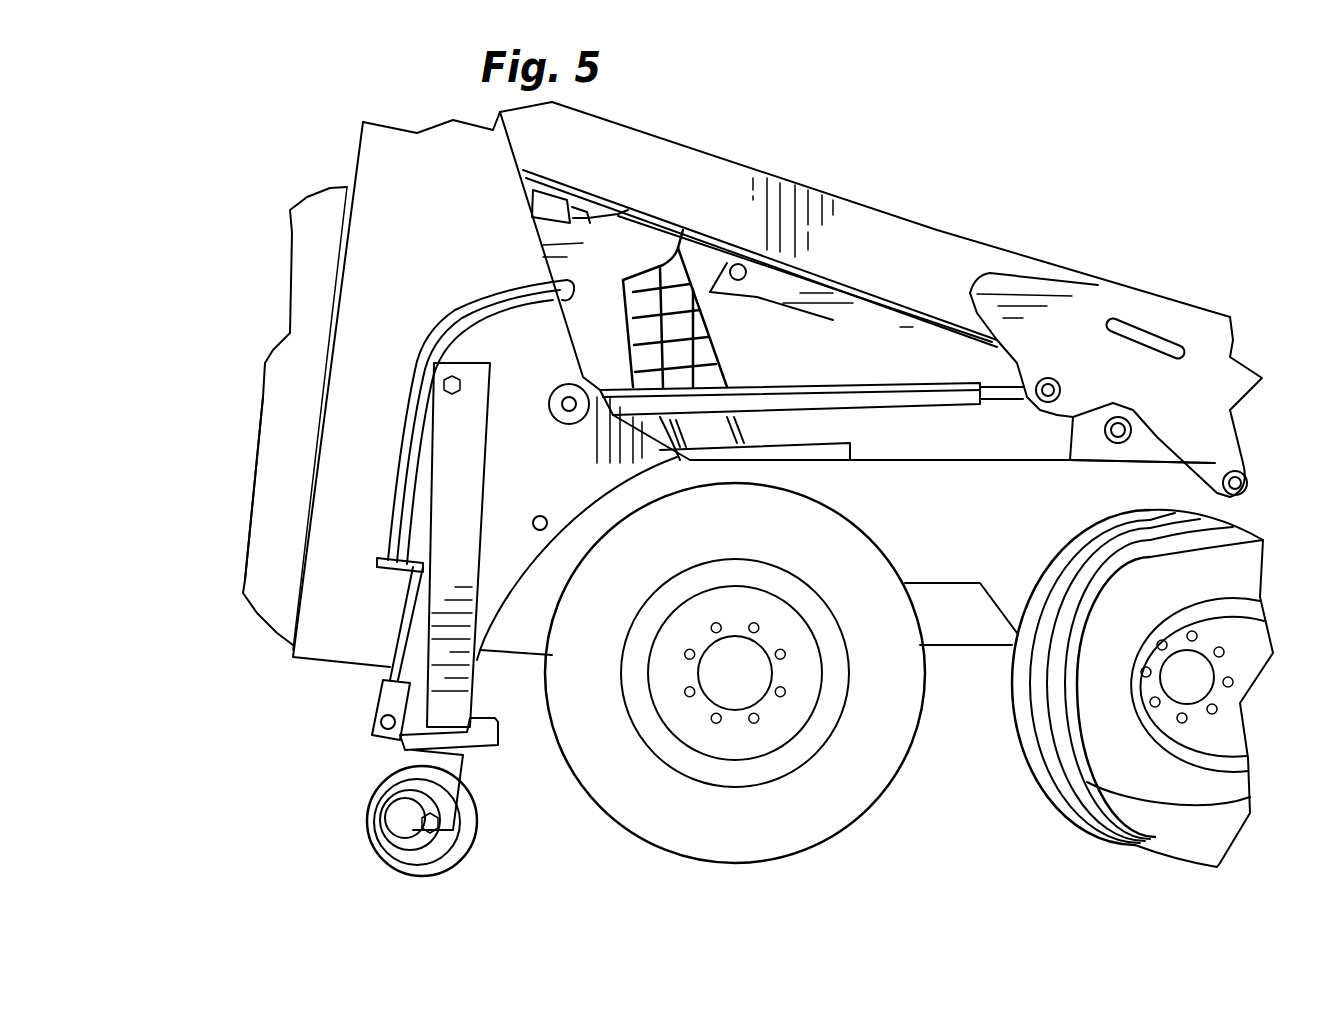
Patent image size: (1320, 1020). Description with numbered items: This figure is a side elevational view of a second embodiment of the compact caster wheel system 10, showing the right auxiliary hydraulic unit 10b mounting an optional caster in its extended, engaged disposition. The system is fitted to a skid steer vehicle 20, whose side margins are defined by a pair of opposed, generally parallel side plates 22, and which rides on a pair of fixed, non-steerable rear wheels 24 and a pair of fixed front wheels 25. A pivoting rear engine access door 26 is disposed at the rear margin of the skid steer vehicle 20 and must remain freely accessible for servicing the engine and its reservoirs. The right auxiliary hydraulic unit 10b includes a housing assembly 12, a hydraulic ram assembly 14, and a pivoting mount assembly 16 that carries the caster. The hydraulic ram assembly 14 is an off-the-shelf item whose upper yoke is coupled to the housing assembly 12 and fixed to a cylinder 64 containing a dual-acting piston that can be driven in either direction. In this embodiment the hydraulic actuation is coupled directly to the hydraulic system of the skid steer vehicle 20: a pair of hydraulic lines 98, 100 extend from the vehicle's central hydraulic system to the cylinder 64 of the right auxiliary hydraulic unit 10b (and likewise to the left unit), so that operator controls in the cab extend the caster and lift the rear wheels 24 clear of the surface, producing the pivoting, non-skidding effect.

The compact caster wheel system 10 is at (362, 350).
The right auxiliary hydraulic unit 10b is at (432, 363).
The housing assembly 12 is at (432, 482).
The hydraulic ram assembly 14 is at (392, 610).
The pivoting mount assembly 16 is at (387, 690).
The skid steer vehicle 20 is at (956, 526).
The side plates 22 is at (317, 630).
The rear wheels 24 is at (827, 830).
The front wheels 25 is at (1158, 820).
The rear engine access door 26 is at (253, 552).
The cylinder 64 is at (400, 540).
The hydraulic line 98 is at (515, 297).
The hydraulic line 100 is at (465, 305).